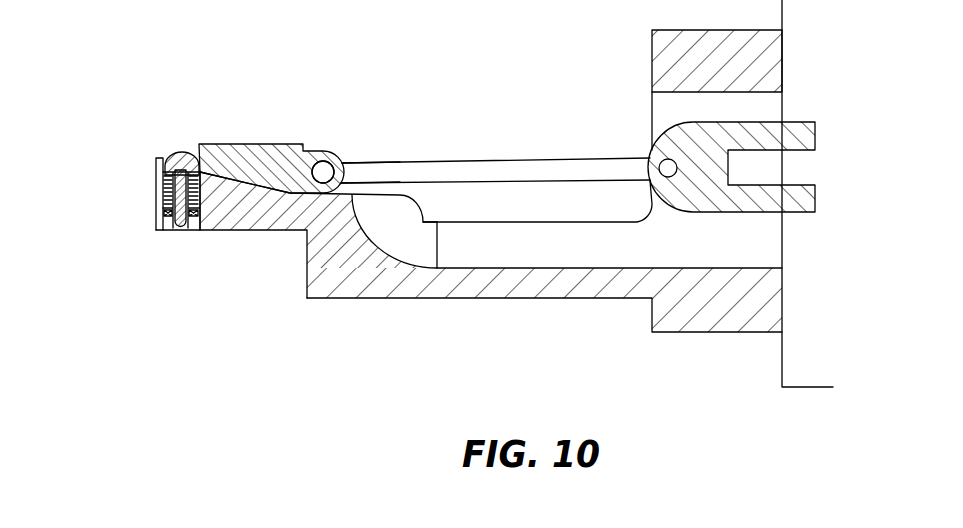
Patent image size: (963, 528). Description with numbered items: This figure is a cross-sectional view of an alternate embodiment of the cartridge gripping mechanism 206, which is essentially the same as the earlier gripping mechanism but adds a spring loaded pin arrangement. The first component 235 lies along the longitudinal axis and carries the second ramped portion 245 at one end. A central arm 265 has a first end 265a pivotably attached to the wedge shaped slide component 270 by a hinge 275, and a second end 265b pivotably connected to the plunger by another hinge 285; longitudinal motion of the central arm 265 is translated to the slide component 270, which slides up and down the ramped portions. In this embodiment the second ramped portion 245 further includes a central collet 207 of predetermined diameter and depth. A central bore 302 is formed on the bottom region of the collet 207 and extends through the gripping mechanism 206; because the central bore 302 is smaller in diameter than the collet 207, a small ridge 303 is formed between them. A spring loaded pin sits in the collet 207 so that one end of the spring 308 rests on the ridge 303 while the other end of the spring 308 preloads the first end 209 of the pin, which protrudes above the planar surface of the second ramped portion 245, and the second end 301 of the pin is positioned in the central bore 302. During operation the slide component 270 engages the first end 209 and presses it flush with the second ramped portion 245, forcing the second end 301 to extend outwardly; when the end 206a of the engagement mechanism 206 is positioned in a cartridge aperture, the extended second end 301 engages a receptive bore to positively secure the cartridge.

The cartridge gripping mechanism 206 is at (382, 383).
The end of engagement mechanism 206a is at (222, 340).
The central collet 207 is at (170, 157).
The first end of pin 209 is at (178, 153).
The first component 235 is at (600, 255).
The second ramped portion 245 is at (245, 180).
The central arm 265 is at (545, 168).
The first end of central arm 265a is at (355, 161).
The second end of central arm 265b is at (633, 172).
The slide component 270 is at (257, 143).
The hinge 275 is at (328, 150).
The hinge 285 is at (653, 135).
The second end of spring loaded pin 301 is at (184, 230).
The central bore 302 is at (157, 227).
The ridge 303 is at (162, 203).
The spring 308 is at (162, 177).